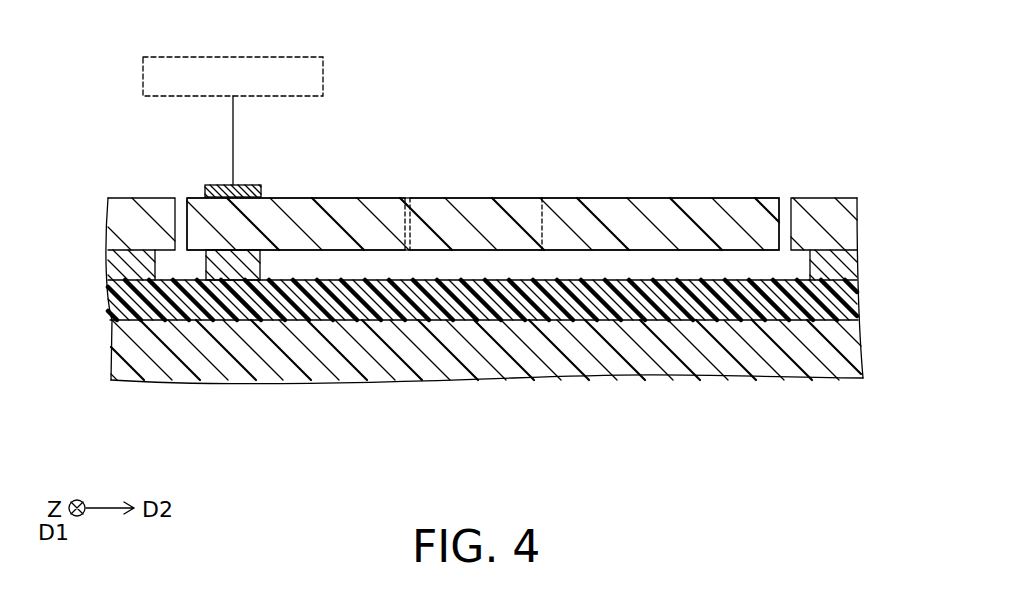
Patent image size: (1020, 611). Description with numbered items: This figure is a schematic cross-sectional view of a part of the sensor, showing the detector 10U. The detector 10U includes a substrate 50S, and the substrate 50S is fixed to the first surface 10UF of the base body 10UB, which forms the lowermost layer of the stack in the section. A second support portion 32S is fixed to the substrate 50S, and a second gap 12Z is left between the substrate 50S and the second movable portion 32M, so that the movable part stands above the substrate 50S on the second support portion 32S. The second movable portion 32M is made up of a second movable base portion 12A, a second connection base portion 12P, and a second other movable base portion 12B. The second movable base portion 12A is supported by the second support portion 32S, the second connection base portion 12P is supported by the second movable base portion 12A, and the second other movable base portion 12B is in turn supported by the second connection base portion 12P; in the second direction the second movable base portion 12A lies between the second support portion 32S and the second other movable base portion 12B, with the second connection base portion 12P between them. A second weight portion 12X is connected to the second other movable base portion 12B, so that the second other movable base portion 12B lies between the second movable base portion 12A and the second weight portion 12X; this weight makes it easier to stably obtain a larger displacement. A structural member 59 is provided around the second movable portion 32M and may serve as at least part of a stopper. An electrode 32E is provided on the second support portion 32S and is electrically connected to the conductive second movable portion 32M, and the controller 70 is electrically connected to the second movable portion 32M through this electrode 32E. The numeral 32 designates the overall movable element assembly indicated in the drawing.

The controller 70 is at (325, 74).
The electrode 32E is at (216, 185).
The structural member 59 is at (147, 215).
The piezoelectric element 32 is at (735, 113).
The second movable base portion 12A is at (333, 215).
The second connection base portion 12P is at (415, 198).
The second other movable base portion 12B is at (483, 215).
The second movable portion 32M is at (520, 215).
The second weight portion 12X is at (668, 215).
The second support portion 32S is at (230, 263).
The second gap 12Z is at (504, 277).
The detector 10U is at (786, 96).
The first surface 10UF is at (124, 306).
The substrate 50S is at (857, 303).
The base body 10UB is at (823, 360).